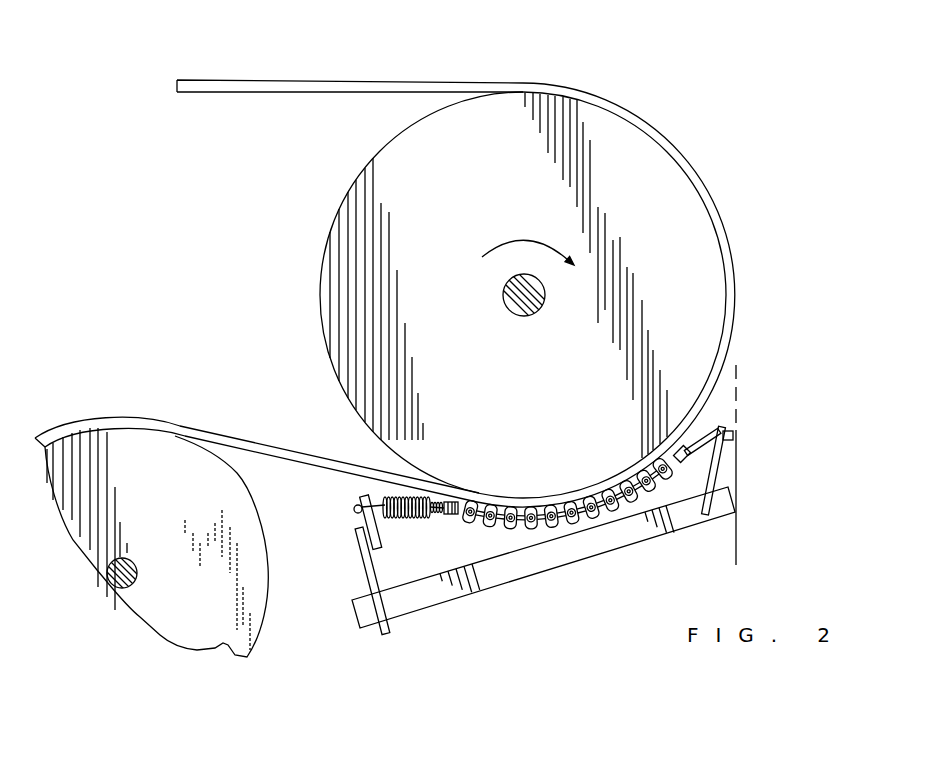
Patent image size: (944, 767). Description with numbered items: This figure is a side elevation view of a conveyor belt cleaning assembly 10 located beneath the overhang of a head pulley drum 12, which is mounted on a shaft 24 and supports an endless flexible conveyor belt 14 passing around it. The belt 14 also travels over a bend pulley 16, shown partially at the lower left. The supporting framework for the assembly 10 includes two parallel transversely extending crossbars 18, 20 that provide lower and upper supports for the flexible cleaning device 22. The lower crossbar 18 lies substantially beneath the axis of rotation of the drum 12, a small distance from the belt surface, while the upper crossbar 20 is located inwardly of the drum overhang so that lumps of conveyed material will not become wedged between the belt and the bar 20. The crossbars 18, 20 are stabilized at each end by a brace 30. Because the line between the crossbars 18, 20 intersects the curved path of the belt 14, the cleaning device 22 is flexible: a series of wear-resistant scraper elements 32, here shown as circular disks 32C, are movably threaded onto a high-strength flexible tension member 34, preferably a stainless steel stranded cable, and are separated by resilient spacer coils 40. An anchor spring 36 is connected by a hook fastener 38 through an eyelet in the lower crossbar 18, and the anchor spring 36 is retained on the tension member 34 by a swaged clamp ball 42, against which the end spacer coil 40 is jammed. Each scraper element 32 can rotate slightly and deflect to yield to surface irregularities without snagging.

The conveyor belt cleaning assembly 10 is at (780, 442).
The head pulley drum 12 is at (352, 186).
The conveyor belt 14 is at (380, 82).
The bend pulley 16 is at (257, 607).
The lower crossbar 18 is at (362, 564).
The upper crossbar 20 is at (724, 447).
The flexible cleaning device 22 is at (500, 530).
The shaft 24 is at (512, 307).
The brace 30 is at (586, 556).
The scraper element 32 is at (713, 490).
The circular disk scraper element 32C is at (533, 528).
The flexible tension member 34 is at (700, 440).
The anchor spring 36 is at (412, 522).
The hook fastener 38 is at (355, 507).
The spacer coil 40 is at (472, 522).
The clamp ball 42 is at (437, 512).